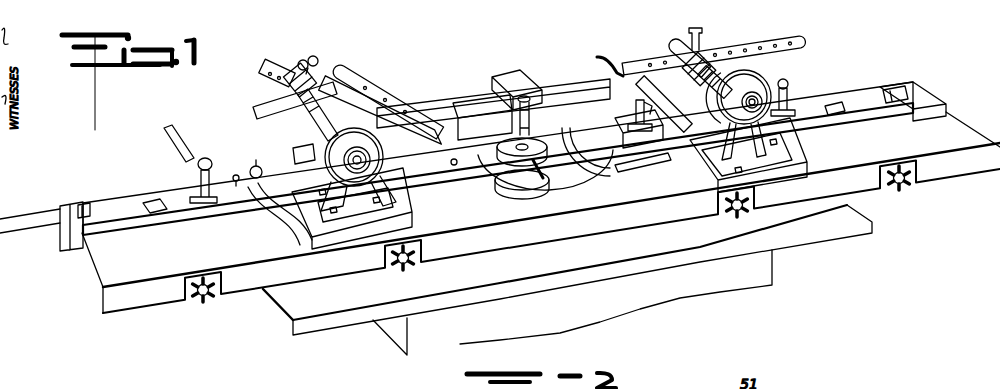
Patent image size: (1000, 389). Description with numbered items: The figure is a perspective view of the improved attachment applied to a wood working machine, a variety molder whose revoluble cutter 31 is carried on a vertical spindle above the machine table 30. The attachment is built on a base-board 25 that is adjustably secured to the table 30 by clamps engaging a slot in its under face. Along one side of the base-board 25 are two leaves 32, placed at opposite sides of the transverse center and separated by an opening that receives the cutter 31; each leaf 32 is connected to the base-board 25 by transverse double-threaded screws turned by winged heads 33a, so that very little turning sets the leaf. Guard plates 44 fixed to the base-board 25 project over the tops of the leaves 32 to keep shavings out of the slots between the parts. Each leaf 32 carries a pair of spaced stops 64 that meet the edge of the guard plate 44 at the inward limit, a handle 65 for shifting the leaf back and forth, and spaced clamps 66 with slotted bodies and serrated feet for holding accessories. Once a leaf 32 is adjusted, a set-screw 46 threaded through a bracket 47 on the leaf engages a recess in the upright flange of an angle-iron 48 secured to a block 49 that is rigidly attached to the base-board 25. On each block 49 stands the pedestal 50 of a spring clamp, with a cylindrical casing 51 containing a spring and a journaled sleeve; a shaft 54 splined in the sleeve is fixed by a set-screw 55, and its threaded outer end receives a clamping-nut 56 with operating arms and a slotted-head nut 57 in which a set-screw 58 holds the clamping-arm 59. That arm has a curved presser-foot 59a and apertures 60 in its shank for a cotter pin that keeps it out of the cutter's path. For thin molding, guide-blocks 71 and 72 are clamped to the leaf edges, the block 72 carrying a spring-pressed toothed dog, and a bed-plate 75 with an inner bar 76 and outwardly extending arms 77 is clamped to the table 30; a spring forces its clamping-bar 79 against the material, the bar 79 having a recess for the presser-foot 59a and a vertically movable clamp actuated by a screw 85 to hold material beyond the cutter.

The base-board 25 is at (114, 267).
The table 30 is at (337, 300).
The revoluble cutter 31 is at (502, 165).
The leaf 32 is at (62, 227).
The winged head 33a is at (933, 194).
The guard plate 44 is at (170, 216).
The set-screw 46 is at (255, 166).
The bracket 47 is at (230, 188).
The angle-iron 48 is at (272, 187).
The block 49 is at (288, 214).
The pedestal 50 is at (408, 205).
The cylindrical casing 51 is at (322, 150).
The shaft 54 is at (318, 115).
The set-screw 55 is at (388, 106).
The clamping-nut 56 is at (254, 112).
The nut 57 is at (298, 67).
The set-screw 58 is at (318, 63).
The clamping-arm 59 is at (378, 107).
The curved presser-foot 59a is at (610, 60).
The apertures 60 is at (268, 78).
The stops 64 is at (151, 201).
The handle 65 is at (84, 202).
The clamp 66 is at (210, 166).
The guide-block 71 is at (572, 148).
The guide-block 72 is at (456, 167).
The bed-plate 75 is at (557, 98).
The bar 76 is at (639, 108).
The arms 77 is at (507, 80).
The clamping-bar 79 is at (483, 127).
The screw 85 is at (531, 96).